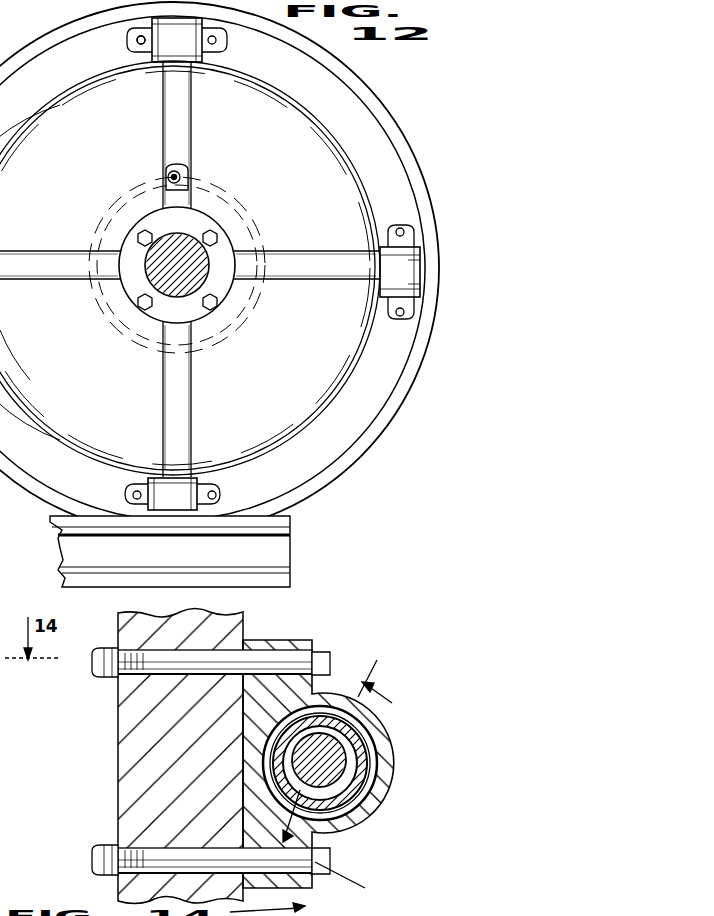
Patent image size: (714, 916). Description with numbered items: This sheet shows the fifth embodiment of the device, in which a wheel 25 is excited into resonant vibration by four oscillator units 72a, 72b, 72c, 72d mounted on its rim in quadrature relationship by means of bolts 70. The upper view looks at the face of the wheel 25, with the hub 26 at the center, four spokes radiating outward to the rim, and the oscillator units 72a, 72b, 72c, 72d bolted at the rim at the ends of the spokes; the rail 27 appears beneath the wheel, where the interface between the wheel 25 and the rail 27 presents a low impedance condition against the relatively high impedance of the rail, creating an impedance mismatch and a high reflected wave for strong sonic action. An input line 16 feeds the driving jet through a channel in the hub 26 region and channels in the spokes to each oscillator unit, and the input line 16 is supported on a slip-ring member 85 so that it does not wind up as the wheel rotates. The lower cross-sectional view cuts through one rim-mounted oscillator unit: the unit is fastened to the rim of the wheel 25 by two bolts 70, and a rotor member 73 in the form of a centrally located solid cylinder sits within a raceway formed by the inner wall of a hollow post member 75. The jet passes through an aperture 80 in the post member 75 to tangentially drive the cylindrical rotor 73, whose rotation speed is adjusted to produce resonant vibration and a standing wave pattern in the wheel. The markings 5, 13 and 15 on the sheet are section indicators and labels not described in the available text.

In FIG. 12, the wheel 5 is at (58, 468).
In FIG. 12, the shaft 13 is at (160, 268).
In FIG. 14, the section line 15 is at (324, 786).
In FIG. 12, the input line 16 is at (186, 178).
In FIG. 14, the wheel 25 is at (125, 745).
In FIG. 12, the hub 26 is at (228, 236).
In FIG. 12, the rail 27 is at (258, 553).
In FIG. 12, the bolts 70 is at (138, 42).
In FIG. 14, the bolts 70 is at (330, 660).
In FIG. 12, the oscillator unit 72a is at (0, 236).
In FIG. 12, the oscillator unit 72b is at (212, 63).
In FIG. 12, the oscillator unit 72c is at (372, 250).
In FIG. 12, the oscillator unit 72d is at (206, 448).
In FIG. 14, the rotor member 73 is at (348, 753).
In FIG. 14, the post member 75 is at (368, 776).
In FIG. 14, the aperture 80 is at (264, 752).
In FIG. 12, the slip-ring member 85 is at (206, 208).